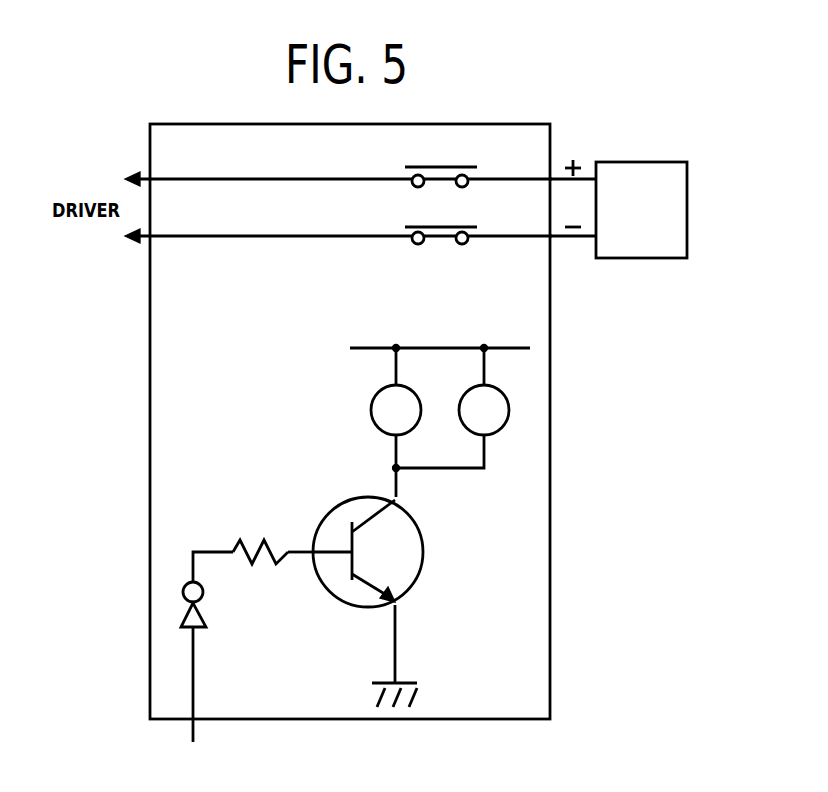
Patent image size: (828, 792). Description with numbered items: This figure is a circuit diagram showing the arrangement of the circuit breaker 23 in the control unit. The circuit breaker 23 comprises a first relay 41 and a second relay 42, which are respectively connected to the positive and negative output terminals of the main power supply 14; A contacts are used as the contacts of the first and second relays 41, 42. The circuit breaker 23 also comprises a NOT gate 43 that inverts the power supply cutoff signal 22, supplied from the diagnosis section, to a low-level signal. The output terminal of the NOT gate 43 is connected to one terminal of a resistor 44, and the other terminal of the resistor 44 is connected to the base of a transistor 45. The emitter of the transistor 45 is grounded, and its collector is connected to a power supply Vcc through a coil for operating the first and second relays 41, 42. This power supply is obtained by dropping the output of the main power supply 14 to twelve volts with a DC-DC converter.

The circuit breaker 23 is at (150, 133).
The main power supply 14 is at (613, 258).
The first relay 41 is at (371, 413).
The second relay 42 is at (502, 424).
The NOT gate 43 is at (207, 620).
The resistor 44 is at (257, 541).
The transistor 45 is at (423, 572).
The power supply cutoff signal 22 is at (193, 727).